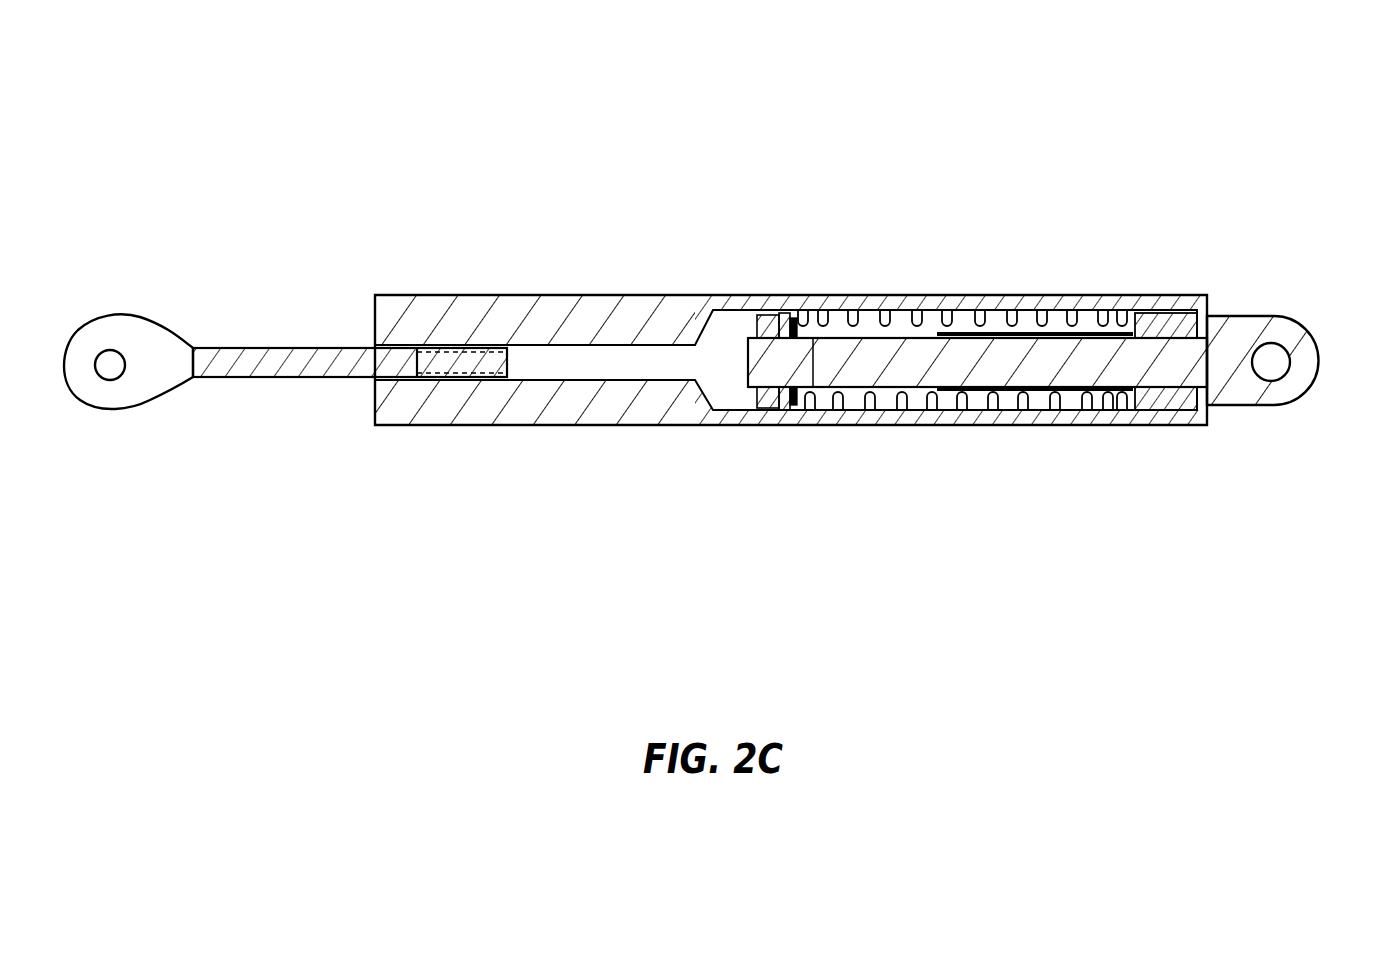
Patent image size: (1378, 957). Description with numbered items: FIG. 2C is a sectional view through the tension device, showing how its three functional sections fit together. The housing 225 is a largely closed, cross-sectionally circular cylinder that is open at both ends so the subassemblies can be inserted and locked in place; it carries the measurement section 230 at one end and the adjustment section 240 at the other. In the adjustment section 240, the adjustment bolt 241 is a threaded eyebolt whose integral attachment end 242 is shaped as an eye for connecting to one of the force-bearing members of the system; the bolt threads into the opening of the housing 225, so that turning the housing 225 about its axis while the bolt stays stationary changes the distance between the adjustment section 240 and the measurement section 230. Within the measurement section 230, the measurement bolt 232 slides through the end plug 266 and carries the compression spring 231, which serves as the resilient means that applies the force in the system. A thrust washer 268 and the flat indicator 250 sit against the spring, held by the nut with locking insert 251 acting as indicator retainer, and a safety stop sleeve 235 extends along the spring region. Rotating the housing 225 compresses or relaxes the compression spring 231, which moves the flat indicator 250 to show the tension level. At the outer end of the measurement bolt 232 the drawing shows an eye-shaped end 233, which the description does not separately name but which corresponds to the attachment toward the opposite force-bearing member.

The piston rod assembly 240 is at (537, 152).
The damper assembly 230 is at (1027, 152).
The rod eye end 242 is at (136, 398).
The piston rod 241 is at (295, 378).
The cylinder housing 225 is at (577, 408).
The damper shaft 231 is at (918, 338).
The piston cup 251 is at (765, 318).
The piston 250 is at (785, 318).
The seal ring 268 is at (799, 405).
The spring 232 is at (885, 387).
The guide bars 235 is at (1035, 333).
The end blocks 266 is at (1142, 407).
The damper eye end 233 is at (1296, 380).